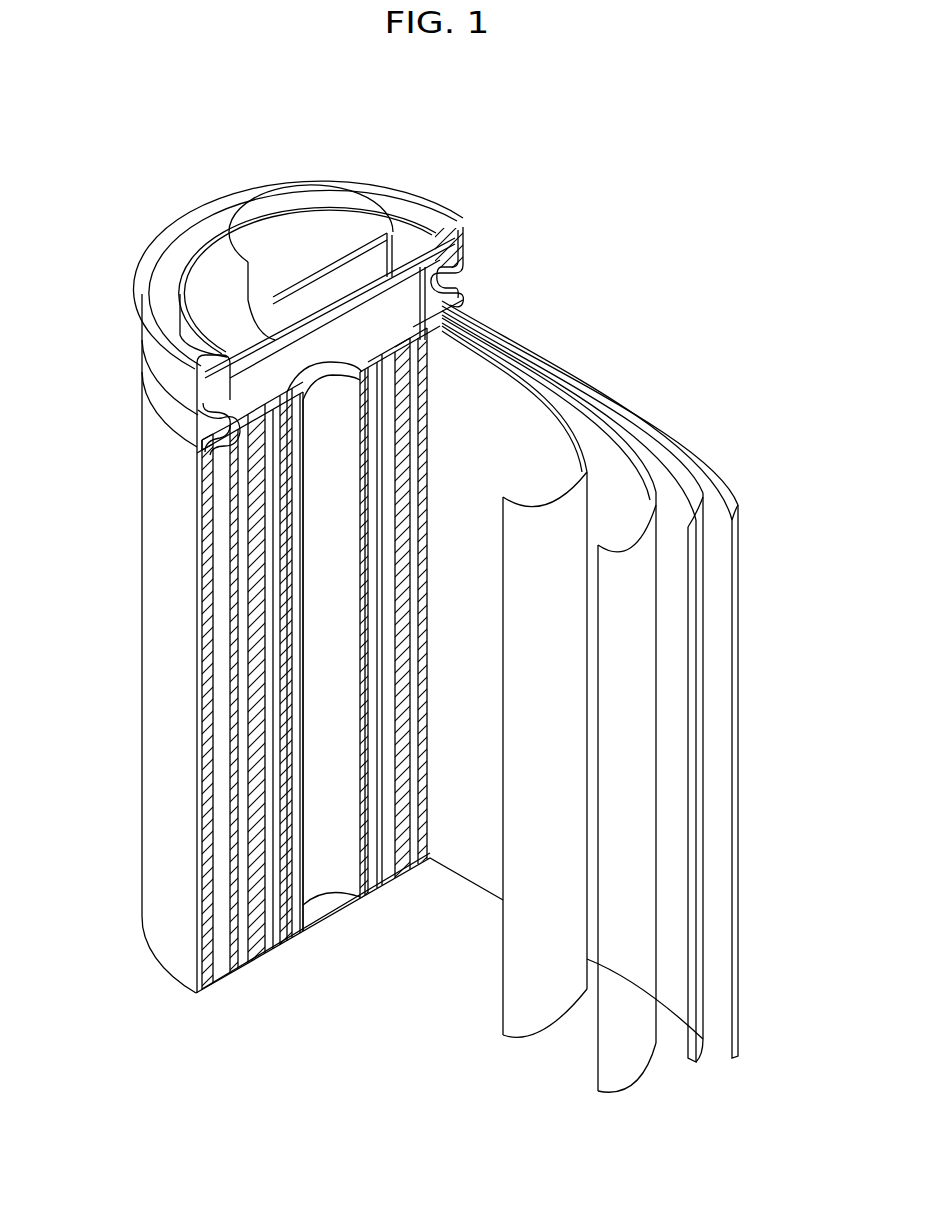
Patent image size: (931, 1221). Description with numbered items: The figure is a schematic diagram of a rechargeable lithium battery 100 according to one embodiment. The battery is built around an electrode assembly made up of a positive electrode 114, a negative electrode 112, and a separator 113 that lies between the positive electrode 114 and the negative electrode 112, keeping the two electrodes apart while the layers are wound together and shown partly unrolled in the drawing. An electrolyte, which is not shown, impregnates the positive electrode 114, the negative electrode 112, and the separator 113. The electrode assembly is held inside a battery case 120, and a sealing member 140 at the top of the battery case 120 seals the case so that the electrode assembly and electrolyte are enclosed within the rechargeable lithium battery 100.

The rechargeable lithium battery 100 is at (527, 173).
The negative electrode 112 is at (735, 500).
The separator 113 is at (538, 390).
The positive electrode 114 is at (623, 447).
The battery case 120 is at (153, 595).
The sealing member 140 is at (270, 252).